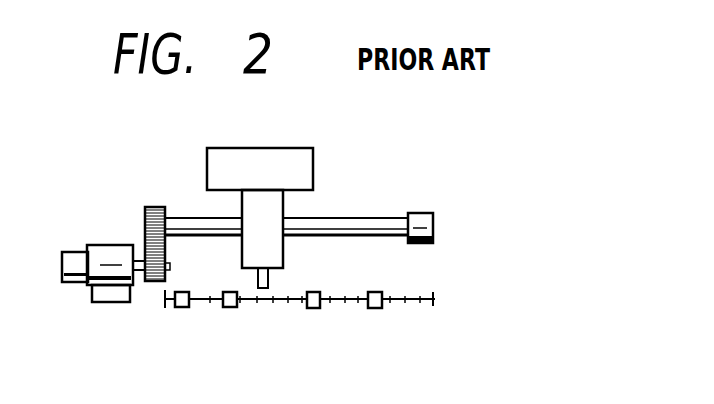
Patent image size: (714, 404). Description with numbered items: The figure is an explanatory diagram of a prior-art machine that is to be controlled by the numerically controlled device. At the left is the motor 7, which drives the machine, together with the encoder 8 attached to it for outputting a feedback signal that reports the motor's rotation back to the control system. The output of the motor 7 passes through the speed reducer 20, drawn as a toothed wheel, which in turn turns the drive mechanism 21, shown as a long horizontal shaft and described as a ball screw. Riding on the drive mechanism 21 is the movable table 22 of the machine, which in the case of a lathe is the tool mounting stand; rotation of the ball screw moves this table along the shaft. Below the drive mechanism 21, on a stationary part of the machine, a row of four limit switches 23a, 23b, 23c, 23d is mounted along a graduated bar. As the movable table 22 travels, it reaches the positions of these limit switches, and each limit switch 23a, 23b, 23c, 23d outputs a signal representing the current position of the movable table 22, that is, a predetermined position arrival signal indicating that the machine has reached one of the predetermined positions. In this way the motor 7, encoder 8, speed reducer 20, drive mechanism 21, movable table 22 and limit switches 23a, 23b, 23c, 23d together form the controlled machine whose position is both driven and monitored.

The motor 7 is at (99, 245).
The encoder 8 is at (70, 252).
The speed reducer 20 is at (153, 282).
The drive mechanism 21 is at (370, 238).
The movable table 22 is at (313, 166).
The limit switch 23a is at (182, 308).
The limit switch 23b is at (230, 308).
The limit switch 23c is at (312, 309).
The limit switch 23d is at (376, 309).